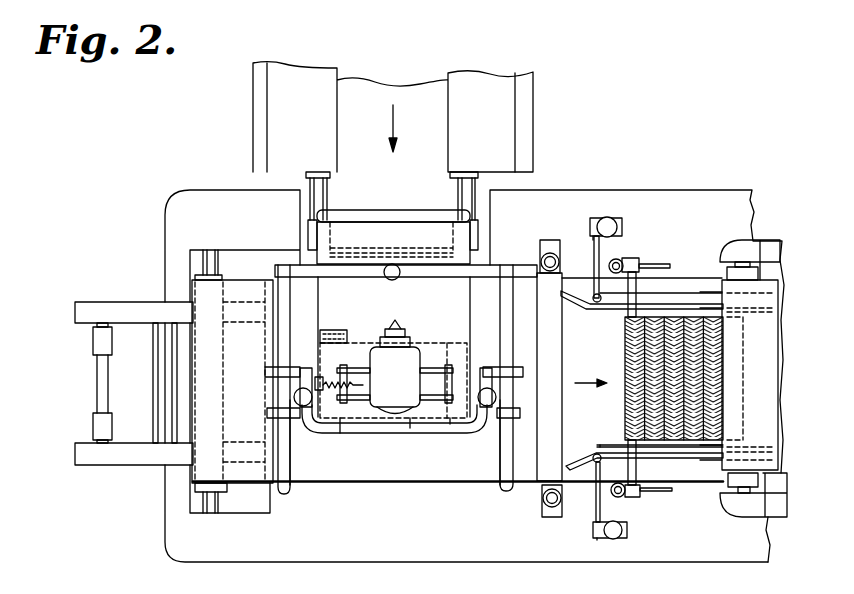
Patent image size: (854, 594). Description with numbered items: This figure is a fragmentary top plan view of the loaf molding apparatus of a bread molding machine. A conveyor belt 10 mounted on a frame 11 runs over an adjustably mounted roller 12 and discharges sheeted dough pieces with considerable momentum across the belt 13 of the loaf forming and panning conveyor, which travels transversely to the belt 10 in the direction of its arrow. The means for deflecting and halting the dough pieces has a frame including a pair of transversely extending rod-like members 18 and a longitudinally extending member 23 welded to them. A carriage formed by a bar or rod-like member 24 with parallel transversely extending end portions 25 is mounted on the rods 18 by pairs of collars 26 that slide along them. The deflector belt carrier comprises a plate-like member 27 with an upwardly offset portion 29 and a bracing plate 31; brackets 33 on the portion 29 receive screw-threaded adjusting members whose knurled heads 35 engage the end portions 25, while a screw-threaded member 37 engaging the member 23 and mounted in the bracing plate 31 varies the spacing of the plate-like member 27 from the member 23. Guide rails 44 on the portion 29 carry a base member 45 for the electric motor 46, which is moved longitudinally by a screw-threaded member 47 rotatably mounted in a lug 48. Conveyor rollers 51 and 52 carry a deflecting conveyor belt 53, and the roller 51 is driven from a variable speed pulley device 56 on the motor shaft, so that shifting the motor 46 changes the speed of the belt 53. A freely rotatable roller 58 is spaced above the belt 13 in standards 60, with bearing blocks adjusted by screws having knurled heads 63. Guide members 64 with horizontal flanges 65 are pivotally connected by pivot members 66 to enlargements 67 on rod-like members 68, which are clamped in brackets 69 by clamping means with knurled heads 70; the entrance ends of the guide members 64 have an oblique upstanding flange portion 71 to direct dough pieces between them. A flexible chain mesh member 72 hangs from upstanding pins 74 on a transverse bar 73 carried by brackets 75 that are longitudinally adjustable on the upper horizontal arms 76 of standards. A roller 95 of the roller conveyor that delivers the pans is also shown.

The conveyor belt 10 is at (432, 80).
The frame 11 is at (500, 125).
The roller 12 is at (452, 210).
The belt of loaf forming and panning conveyor 13 is at (378, 478).
The transversely extending rod-like members 18 is at (306, 442).
The longitudinally extending member 23 is at (480, 266).
The bar or rod-like member 24 is at (415, 428).
The transversely extending end portions 25 is at (305, 367).
The collars 26 is at (268, 370).
The plate-like member 27 is at (385, 218).
The portion parallel to main body portion 29 is at (436, 350).
The bracing plate 31 is at (342, 293).
The brackets 33 is at (280, 424).
The knurled heads 35 is at (294, 396).
The screw-threaded member 37 is at (394, 265).
The guide rails 44 is at (449, 364).
The base member 45 is at (353, 362).
The electric motor 46 is at (408, 345).
The screw-threaded member 47 is at (344, 330).
The lug 48 is at (326, 378).
The conveyor roller 51 is at (339, 435).
The conveyor roller 52 is at (450, 424).
The conveyor belt 53 is at (355, 436).
The variable speed pulley device 56 is at (396, 319).
The roller 58 is at (603, 445).
The standards 60 is at (550, 240).
The knurled heads 63 is at (560, 260).
The guide members 64 is at (660, 300).
The horizontal flanges 65 is at (695, 300).
The pivot members 66 is at (594, 296).
The enlargements 67 is at (599, 302).
The rod-like members 68 is at (632, 527).
The brackets 69 is at (593, 218).
The knurled heads 70 is at (614, 222).
The oblique upstanding flange portion 71 is at (572, 305).
The flexible chain mesh member 72 is at (722, 366).
The transverse bar 73 is at (641, 491).
The upstanding pins 74 is at (628, 395).
The brackets 75 is at (634, 258).
The upper horizontal arms 76 is at (655, 264).
The roller 95 is at (100, 343).